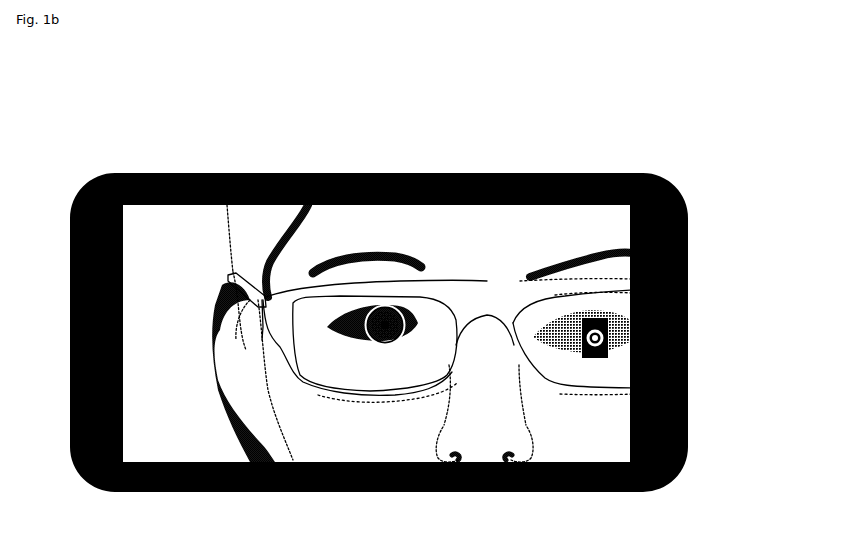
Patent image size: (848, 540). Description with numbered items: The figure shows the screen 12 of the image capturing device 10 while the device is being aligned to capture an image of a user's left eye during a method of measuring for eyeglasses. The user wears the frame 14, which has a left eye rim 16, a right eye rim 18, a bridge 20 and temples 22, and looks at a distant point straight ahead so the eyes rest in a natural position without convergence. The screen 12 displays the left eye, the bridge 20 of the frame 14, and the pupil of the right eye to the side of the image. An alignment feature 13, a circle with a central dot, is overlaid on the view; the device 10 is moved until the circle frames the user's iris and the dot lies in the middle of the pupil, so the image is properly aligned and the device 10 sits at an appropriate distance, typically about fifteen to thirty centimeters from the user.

The image capturing device 10 is at (706, 242).
The screen 12 is at (206, 222).
The alignment feature 13 is at (366, 325).
The frame 14 is at (487, 278).
The left eye rim 16 is at (318, 384).
The right eye rim 18 is at (549, 385).
The bridge 20 is at (487, 305).
The temples 22 is at (258, 303).